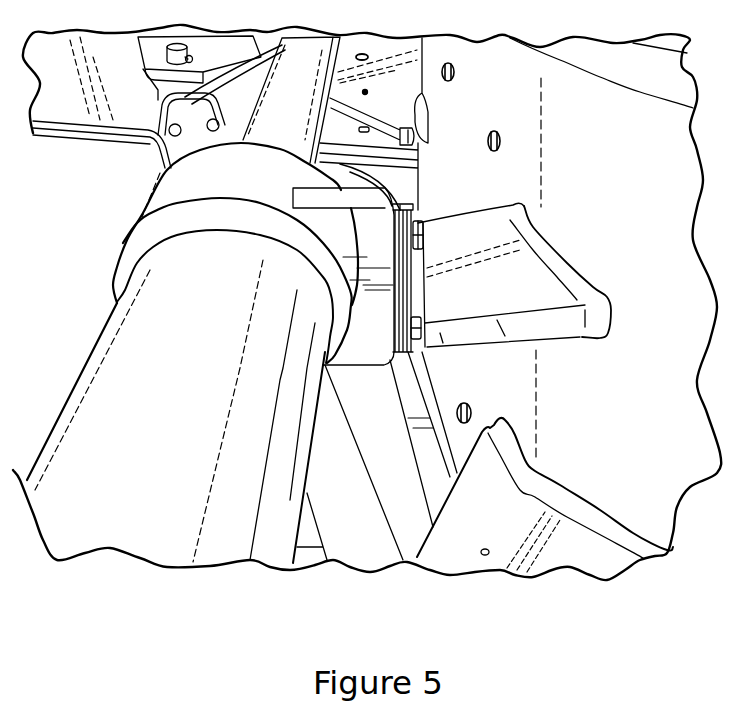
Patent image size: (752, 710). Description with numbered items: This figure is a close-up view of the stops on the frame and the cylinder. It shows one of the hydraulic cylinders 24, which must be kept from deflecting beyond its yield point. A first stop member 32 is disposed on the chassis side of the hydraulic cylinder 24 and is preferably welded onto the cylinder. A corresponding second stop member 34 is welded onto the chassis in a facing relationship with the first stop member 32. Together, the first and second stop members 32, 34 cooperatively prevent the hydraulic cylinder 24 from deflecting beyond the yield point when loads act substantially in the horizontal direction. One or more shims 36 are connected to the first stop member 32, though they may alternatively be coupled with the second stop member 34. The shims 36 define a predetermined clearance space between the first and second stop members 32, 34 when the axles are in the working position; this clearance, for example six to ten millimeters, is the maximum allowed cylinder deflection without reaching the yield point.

The hydraulic cylinder 24 is at (147, 520).
The first stop member 32 is at (406, 186).
The second stop member 34 is at (547, 323).
The shim 36 is at (400, 277).